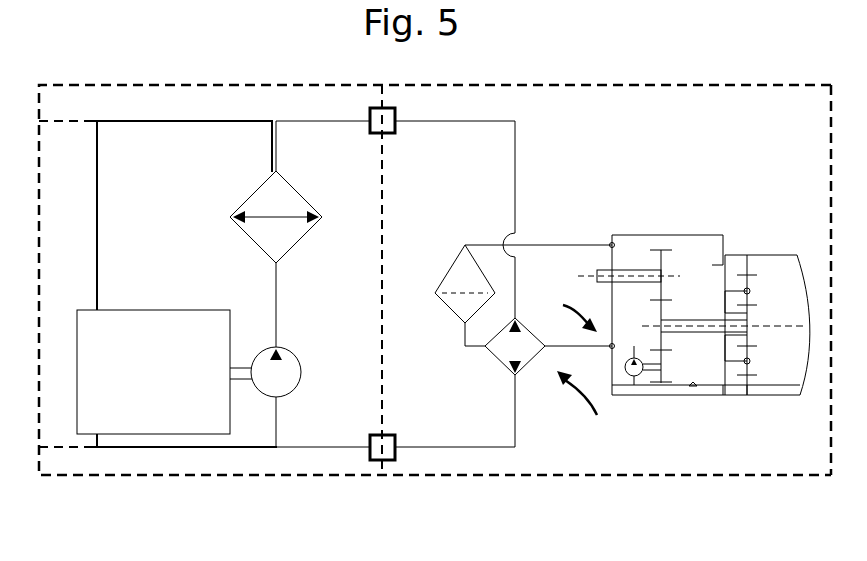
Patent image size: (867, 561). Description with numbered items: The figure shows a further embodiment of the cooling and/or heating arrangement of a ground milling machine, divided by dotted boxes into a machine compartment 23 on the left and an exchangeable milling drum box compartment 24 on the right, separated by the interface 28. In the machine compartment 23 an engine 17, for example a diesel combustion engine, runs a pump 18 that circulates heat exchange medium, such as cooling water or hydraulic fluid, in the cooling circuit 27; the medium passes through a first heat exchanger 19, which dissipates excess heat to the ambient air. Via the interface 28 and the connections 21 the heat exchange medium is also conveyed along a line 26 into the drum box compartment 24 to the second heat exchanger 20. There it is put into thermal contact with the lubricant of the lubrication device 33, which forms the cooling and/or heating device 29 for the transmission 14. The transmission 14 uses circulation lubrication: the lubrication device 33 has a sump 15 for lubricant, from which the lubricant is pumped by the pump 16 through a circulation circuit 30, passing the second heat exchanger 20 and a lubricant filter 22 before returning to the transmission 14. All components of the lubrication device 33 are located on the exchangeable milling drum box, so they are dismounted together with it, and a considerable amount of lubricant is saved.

The transmission 14 is at (715, 238).
The sump 15 is at (703, 392).
The pump 16 is at (637, 373).
The engine 17 is at (145, 420).
The pump 18 is at (268, 380).
The first heat exchanger 19 is at (270, 198).
The second heat exchanger 20 is at (528, 352).
The connections 21 is at (390, 125).
The lubricant filter 22 is at (460, 278).
The machine compartment 23 is at (122, 85).
The exchangeable milling drum box compartment 24 is at (718, 86).
The hydraulic line 26 is at (515, 205).
The cooling circuit 27 is at (217, 121).
The interface 28 is at (372, 125).
The cooling and/or heating device 29 is at (586, 413).
The circulation circuit 30 is at (568, 245).
The lubrication device 33 is at (567, 306).